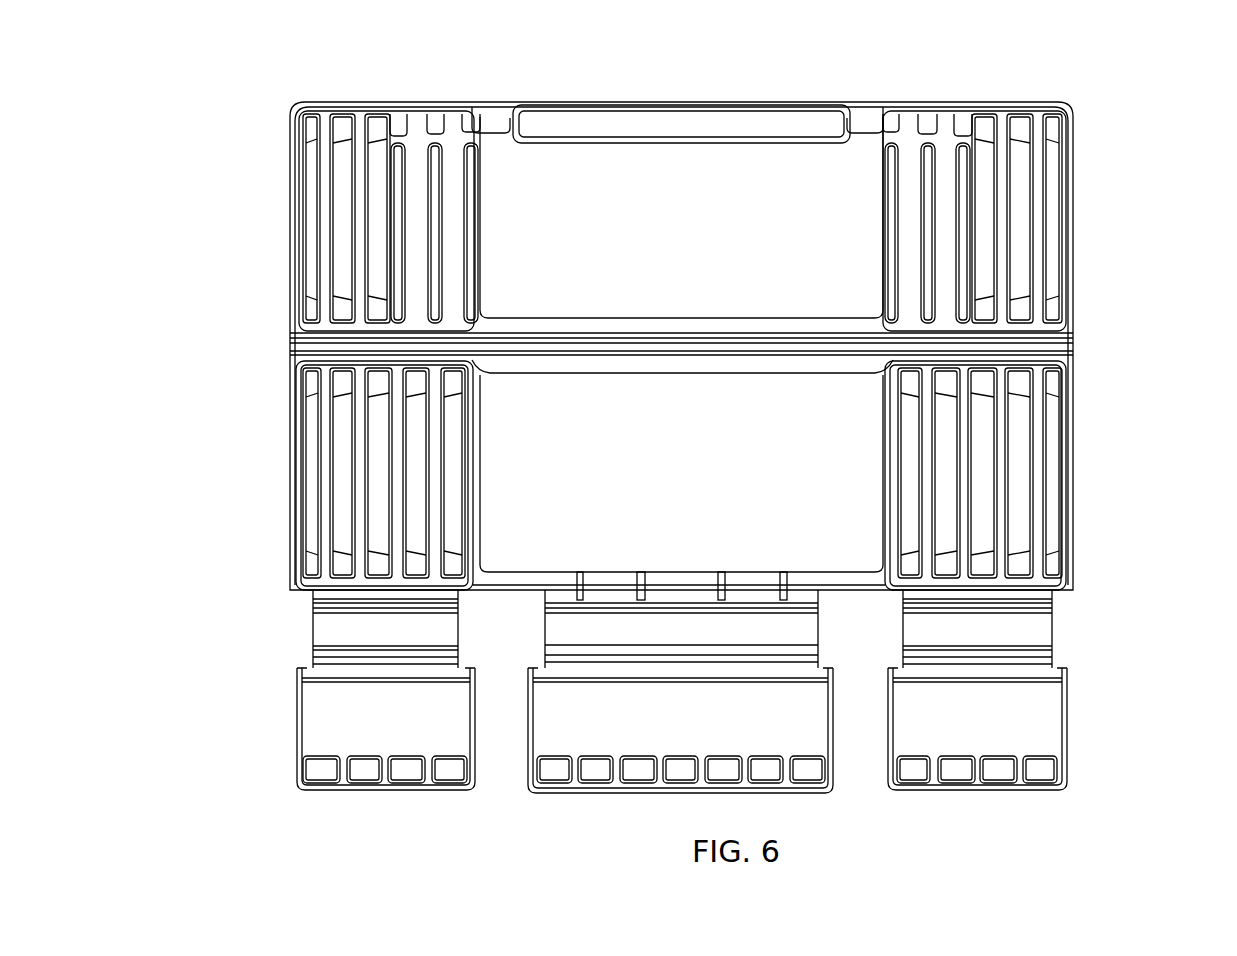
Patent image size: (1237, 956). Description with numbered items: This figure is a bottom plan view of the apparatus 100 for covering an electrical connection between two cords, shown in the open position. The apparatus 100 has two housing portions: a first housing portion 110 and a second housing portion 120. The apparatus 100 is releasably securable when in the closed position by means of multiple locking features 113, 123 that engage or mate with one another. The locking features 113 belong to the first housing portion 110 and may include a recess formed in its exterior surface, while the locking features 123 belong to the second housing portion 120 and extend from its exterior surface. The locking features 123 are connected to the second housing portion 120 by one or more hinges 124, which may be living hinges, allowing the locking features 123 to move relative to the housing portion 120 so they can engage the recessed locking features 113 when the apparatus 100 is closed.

The apparatus 100 is at (262, 152).
The first housing portion 110 is at (855, 85).
The locking features 113 is at (370, 115).
The second housing portion 120 is at (842, 608).
The locking features 123 is at (362, 782).
The hinges 124 is at (357, 603).